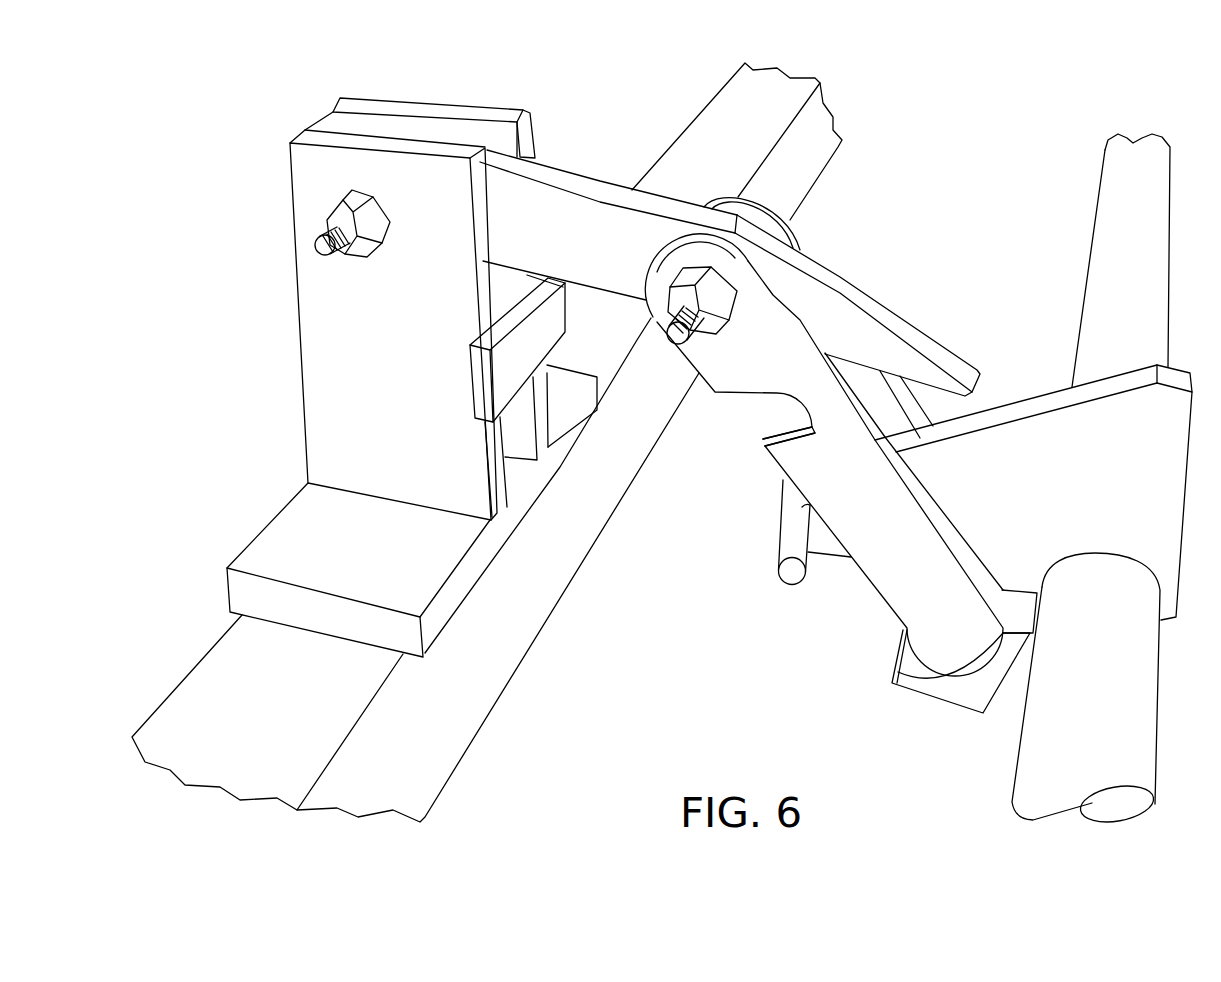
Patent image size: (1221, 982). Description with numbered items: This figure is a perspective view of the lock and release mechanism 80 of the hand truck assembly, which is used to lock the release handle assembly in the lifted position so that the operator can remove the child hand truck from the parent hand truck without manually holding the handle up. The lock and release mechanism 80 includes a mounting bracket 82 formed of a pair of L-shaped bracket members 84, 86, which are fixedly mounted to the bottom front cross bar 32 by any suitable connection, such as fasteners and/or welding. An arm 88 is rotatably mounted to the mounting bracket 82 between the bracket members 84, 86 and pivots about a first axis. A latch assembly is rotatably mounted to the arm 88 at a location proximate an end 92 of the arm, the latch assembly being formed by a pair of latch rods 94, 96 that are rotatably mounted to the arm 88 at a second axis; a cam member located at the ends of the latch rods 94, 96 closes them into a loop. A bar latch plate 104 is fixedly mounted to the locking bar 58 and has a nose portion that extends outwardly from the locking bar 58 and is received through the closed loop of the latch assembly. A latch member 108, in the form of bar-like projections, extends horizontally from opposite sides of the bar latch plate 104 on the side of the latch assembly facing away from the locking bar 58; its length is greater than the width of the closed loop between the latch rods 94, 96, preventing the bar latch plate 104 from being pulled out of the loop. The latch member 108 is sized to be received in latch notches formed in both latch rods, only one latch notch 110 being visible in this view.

The bottom front cross bar 32 is at (203, 673).
The locking bar 58 is at (1145, 740).
The lock and release mechanism 80 is at (252, 111).
The mounting bracket 82 is at (284, 315).
The bracket member 84 is at (313, 422).
The bracket member 86 is at (483, 110).
The arm 88 is at (670, 207).
The end of the arm 92 is at (920, 338).
The latch rod 94 is at (888, 588).
The latch rod 96 is at (772, 213).
The bar latch plate 104 is at (1134, 375).
The latch member 108 is at (790, 548).
The latch notch 110 is at (767, 441).